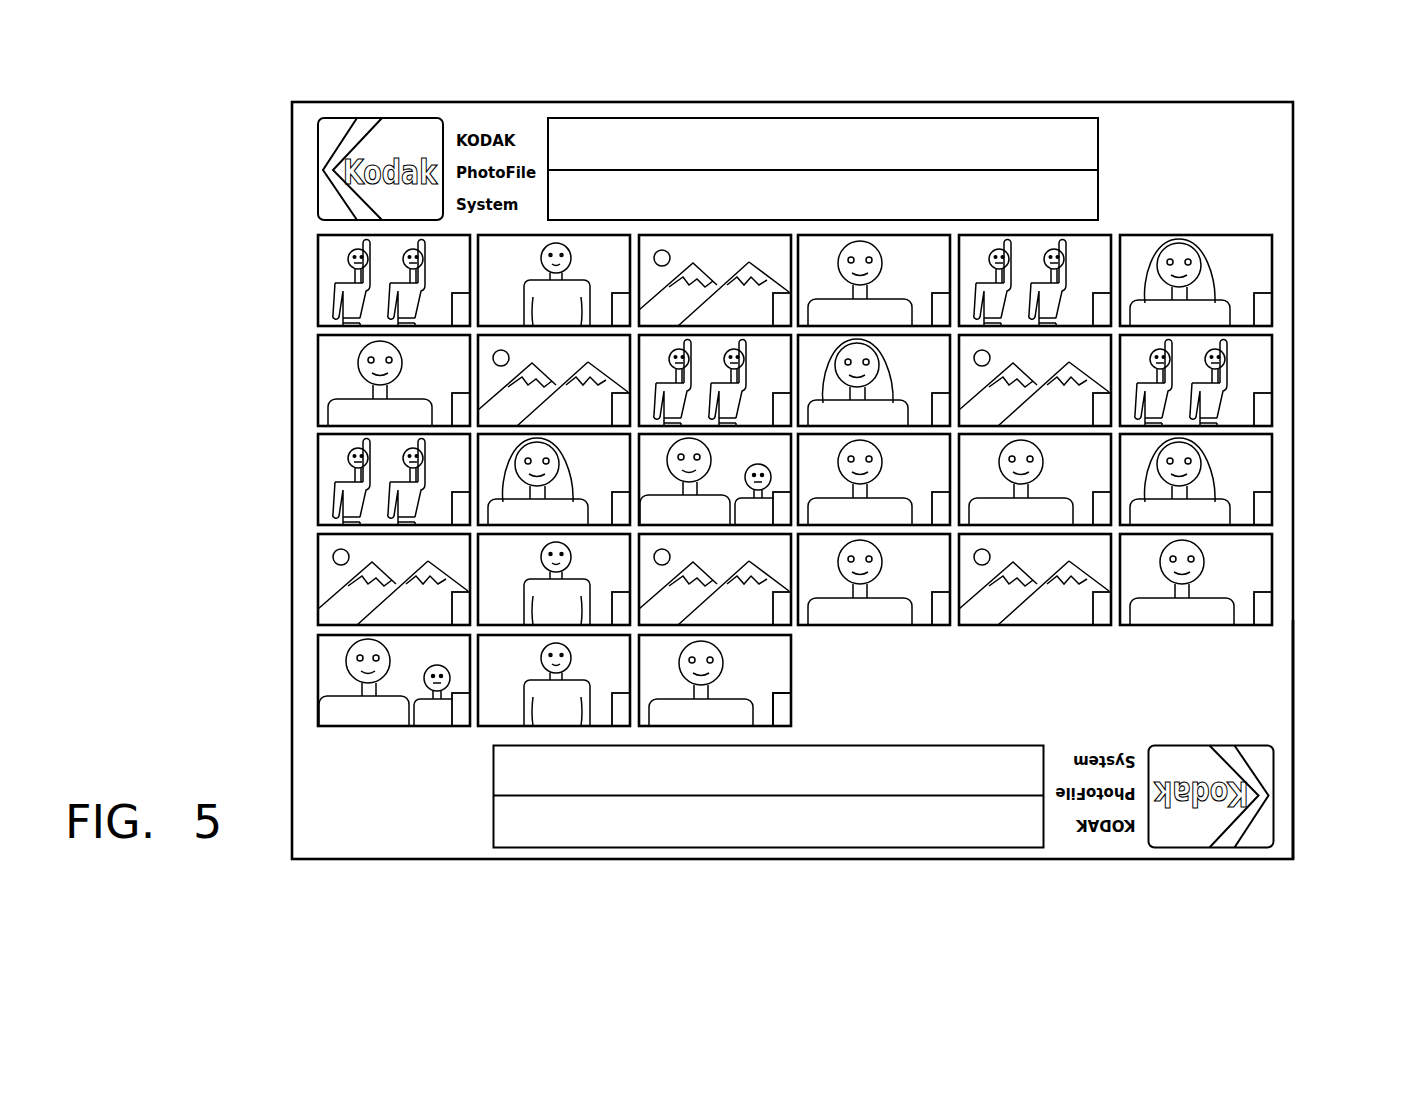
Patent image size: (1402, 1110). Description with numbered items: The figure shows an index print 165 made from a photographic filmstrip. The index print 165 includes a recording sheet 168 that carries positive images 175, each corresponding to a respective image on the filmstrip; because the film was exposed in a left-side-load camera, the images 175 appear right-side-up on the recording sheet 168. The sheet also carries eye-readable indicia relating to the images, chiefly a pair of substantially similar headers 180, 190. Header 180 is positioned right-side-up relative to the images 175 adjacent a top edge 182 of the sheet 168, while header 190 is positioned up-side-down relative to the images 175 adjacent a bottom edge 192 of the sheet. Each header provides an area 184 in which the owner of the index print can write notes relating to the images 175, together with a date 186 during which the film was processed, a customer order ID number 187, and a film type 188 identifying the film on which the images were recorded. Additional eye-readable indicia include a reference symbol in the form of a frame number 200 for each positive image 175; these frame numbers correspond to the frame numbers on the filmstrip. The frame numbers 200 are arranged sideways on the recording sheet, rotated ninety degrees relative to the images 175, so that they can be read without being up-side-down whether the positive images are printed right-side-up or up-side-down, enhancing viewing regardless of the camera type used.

The index print 165 is at (748, 474).
The recording sheet 168 is at (1282, 702).
The positive images 175 is at (735, 480).
The header 180 is at (493, 110).
The top edge 182 is at (898, 102).
The notes area 184 is at (643, 127).
The date 186 is at (1243, 102).
The customer order ID number 187 is at (1140, 102).
The film type 188 is at (1287, 218).
The header 190 is at (1120, 853).
The bottom edge 192 is at (940, 860).
The frame number 200 is at (786, 722).